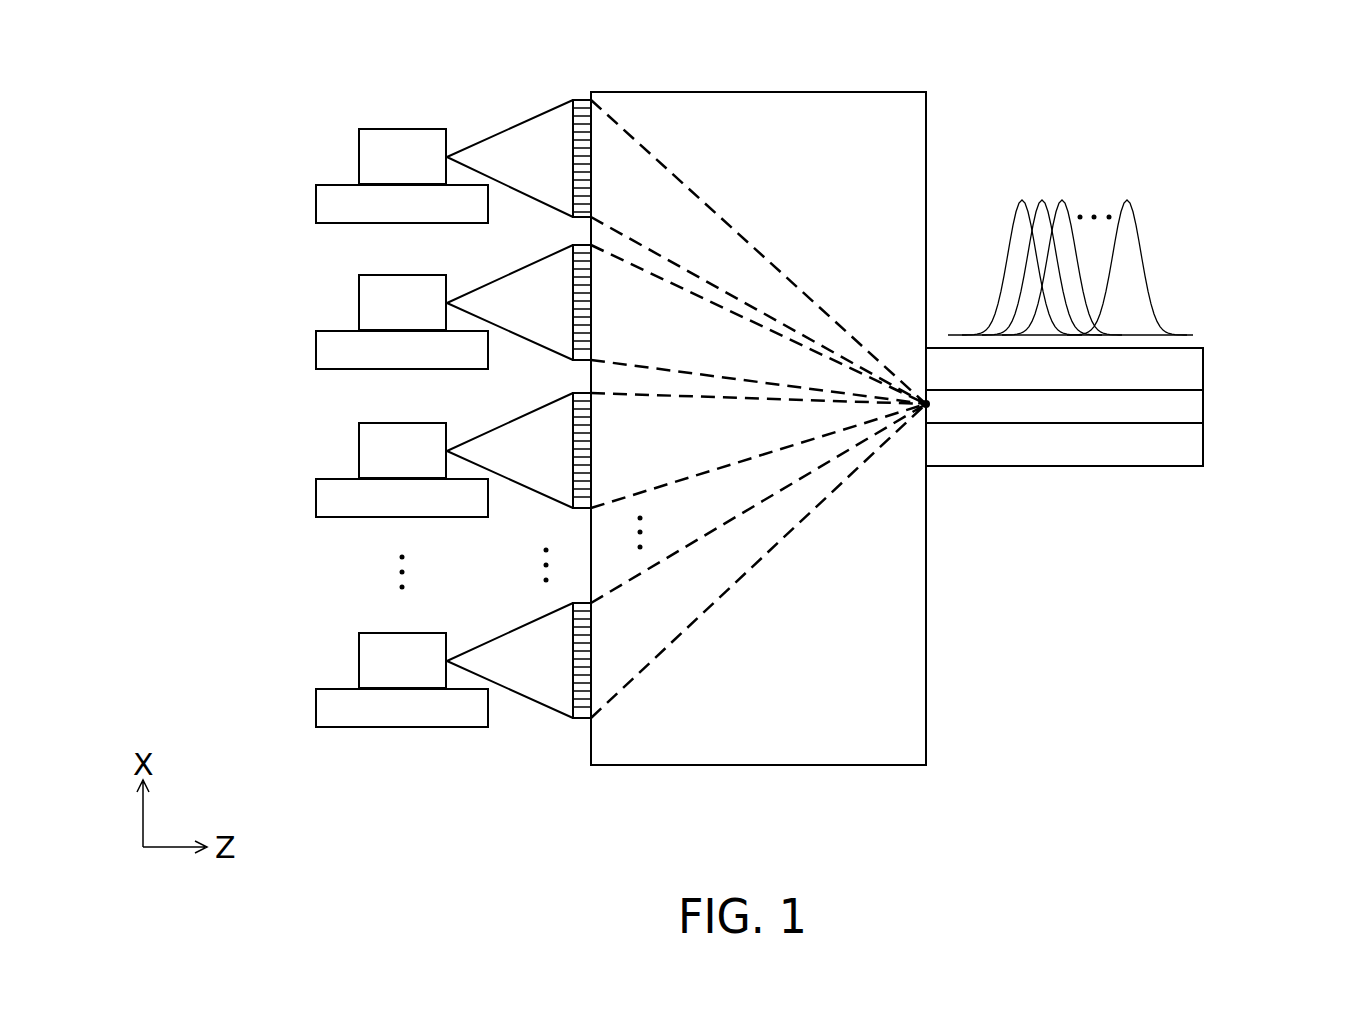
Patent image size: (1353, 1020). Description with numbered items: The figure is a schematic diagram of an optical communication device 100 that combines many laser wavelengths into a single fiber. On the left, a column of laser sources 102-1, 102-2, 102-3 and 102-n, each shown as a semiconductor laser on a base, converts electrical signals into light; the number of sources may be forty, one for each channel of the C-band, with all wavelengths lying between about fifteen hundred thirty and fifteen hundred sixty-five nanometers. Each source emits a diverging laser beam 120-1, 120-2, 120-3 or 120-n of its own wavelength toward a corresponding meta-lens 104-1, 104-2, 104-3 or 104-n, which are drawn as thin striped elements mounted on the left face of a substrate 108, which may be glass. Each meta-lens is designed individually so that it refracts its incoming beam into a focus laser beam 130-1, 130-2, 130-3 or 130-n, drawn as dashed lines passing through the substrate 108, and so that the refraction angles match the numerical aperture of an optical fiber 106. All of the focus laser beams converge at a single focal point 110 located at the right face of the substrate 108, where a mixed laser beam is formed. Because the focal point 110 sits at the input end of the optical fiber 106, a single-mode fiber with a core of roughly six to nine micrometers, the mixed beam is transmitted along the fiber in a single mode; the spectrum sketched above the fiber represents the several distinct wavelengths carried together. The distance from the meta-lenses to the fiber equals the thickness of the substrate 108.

The optical communication device 100 is at (200, 47).
The laser source 102-1 is at (359, 157).
The laser source 102-2 is at (359, 303).
The laser source 102-3 is at (359, 450).
The laser source 102-n is at (359, 661).
The meta-lens 104-1 is at (576, 100).
The meta-lens 104-2 is at (580, 362).
The meta-lens 104-3 is at (578, 510).
The meta-lens 104-n is at (578, 720).
The optical fiber 106 is at (1183, 372).
The substrate 108 is at (906, 117).
The focal point 110 is at (926, 404).
The laser beam 120-1 is at (565, 175).
The laser beam 120-2 is at (510, 302).
The laser beam 120-3 is at (510, 450).
The laser beam 120-n is at (510, 660).
The focus laser beam 130-1 is at (680, 210).
The focus laser beam 130-2 is at (680, 343).
The focus laser beam 130-3 is at (680, 455).
The focus laser beam 130-n is at (680, 632).